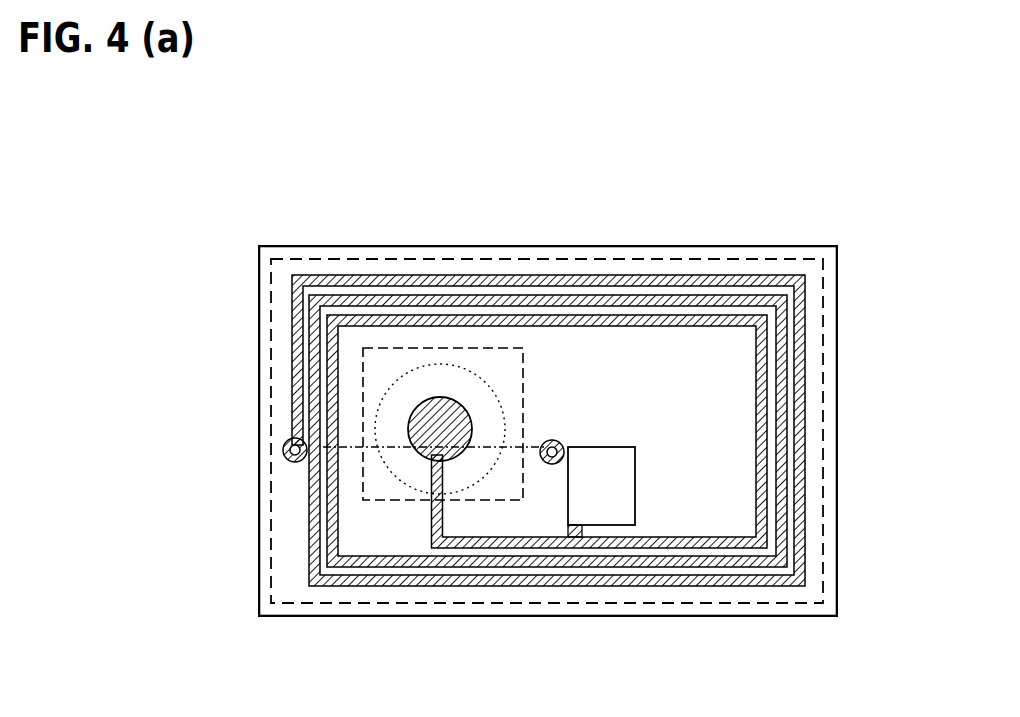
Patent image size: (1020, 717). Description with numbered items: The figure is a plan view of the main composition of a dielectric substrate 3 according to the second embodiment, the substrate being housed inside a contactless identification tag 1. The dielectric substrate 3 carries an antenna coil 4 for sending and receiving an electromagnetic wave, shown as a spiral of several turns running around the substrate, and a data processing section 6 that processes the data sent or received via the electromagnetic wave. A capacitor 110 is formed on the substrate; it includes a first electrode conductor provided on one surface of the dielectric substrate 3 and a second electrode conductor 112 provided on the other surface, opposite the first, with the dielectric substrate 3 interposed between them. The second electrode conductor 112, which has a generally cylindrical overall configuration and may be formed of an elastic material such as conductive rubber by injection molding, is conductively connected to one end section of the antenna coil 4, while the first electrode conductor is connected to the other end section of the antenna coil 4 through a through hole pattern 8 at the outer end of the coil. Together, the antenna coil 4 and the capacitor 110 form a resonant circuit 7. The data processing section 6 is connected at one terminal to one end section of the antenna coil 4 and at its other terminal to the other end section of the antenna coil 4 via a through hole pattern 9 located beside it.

The contactless identification tag 1 is at (722, 214).
The dielectric substrate 3 is at (838, 303).
The antenna coil 4 is at (805, 399).
The data processing section 6 is at (623, 485).
The resonant circuit 7 is at (823, 490).
The through hole pattern 8 is at (289, 443).
The through hole pattern 9 is at (559, 441).
The capacitor 110 is at (523, 362).
The second electrode conductor 112 is at (468, 412).